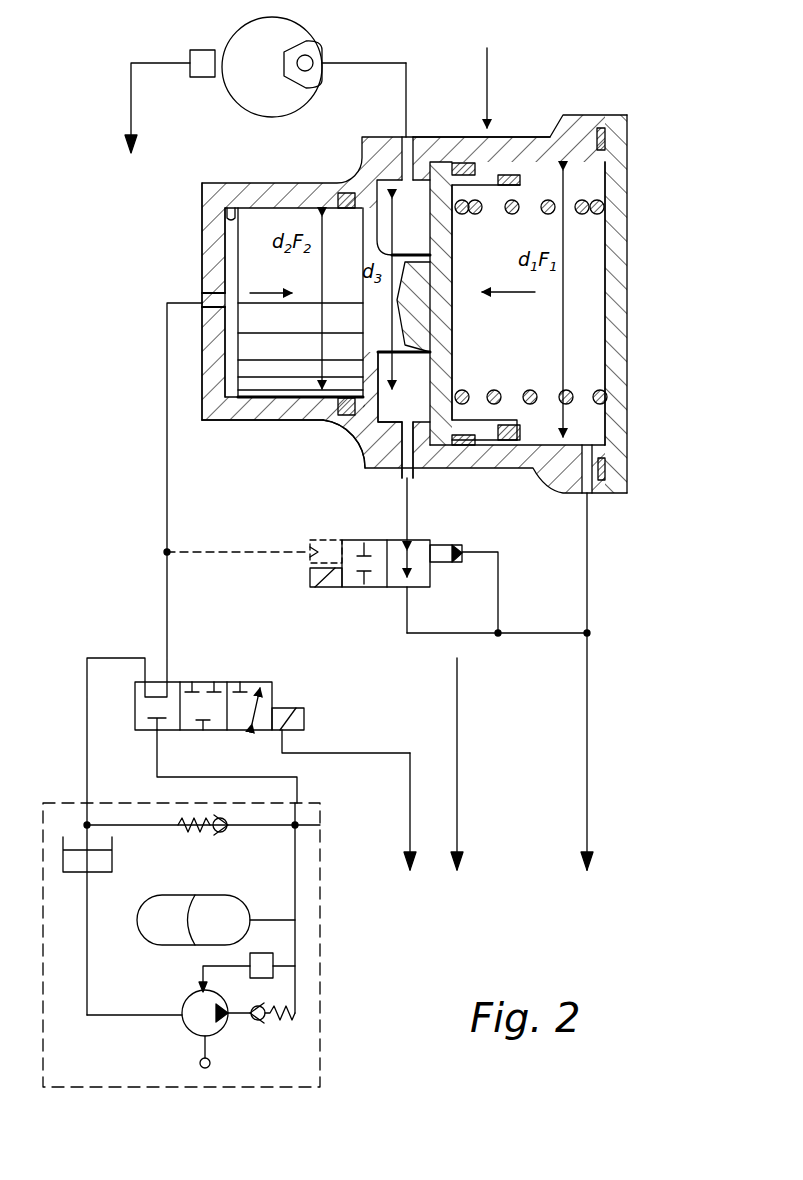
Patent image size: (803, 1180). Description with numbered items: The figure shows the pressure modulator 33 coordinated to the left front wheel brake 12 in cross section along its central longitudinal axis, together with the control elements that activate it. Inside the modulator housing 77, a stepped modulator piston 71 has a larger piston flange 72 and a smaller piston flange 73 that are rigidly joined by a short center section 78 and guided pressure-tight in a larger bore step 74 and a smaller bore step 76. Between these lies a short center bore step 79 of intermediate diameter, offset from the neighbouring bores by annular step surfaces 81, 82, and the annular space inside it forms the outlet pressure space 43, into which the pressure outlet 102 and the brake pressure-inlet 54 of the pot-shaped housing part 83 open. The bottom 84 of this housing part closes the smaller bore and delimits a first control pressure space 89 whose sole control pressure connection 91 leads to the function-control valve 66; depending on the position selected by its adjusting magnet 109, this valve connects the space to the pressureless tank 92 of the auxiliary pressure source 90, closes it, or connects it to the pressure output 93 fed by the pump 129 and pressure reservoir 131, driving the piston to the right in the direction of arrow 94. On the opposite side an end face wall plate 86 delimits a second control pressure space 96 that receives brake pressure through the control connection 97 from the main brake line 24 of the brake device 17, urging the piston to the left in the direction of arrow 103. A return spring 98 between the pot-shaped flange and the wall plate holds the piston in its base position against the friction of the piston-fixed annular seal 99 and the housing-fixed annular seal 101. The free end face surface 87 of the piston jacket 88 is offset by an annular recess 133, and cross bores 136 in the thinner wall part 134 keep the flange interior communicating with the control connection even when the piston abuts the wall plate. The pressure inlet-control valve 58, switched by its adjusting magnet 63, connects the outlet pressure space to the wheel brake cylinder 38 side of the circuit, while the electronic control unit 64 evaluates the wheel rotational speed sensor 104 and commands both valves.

The wheel brake 12 is at (288, 37).
The wheel brake cylinder 38 is at (315, 57).
The wheel rotational speed sensor 104 is at (200, 50).
The electronic control unit 64 is at (293, 516).
The bottom 84 is at (215, 228).
The first control pressure space 89 is at (228, 262).
The control pressure connection 91 is at (202, 298).
The pressure modulator 33 is at (262, 422).
The step surface 82 is at (372, 400).
The pressure outlet 102 is at (397, 155).
The center bore step 79 is at (420, 150).
The modulator housing 77 is at (488, 79).
The pot-shaped housing part 83 is at (507, 145).
The larger bore step 74 is at (578, 150).
The piston-fixed annular seal 99 is at (465, 162).
The free end face surface 87 is at (532, 165).
The end face wall plate 86 is at (612, 185).
The second control pressure space 96 is at (596, 250).
The return spring 98 is at (606, 402).
The control connection 97 is at (578, 495).
The larger piston flange 72 is at (445, 292).
The modulator piston 71 is at (456, 245).
The arrow 103 is at (520, 305).
The cross bores 136 is at (500, 432).
The thinner wall part 134 is at (520, 432).
The annular recess 133 is at (506, 442).
The piston jacket 88 is at (470, 448).
The smaller piston flange 73 is at (282, 230).
The smaller bore step 76 is at (240, 215).
The arrow 94 is at (272, 290).
The housing-fixed annular seal 101 is at (342, 192).
The outlet pressure space 43 is at (348, 416).
The center section 78 is at (400, 387).
The pressure inlet-control valve 58 is at (400, 580).
The adjusting magnet 63 is at (310, 578).
The step surface 81 is at (414, 472).
The brake pressure-inlet 54 is at (400, 470).
The main brake line 24 is at (590, 712).
The brake device 17 is at (590, 878).
The function-control valve 66 is at (148, 700).
The adjusting magnet 109 is at (298, 712).
The auxiliary pressure source 90 is at (262, 1072).
The pressure output 93 is at (300, 824).
The pressureless tank 92 is at (108, 860).
The pressure reservoir 131 is at (165, 935).
The pump 129 is at (192, 1025).